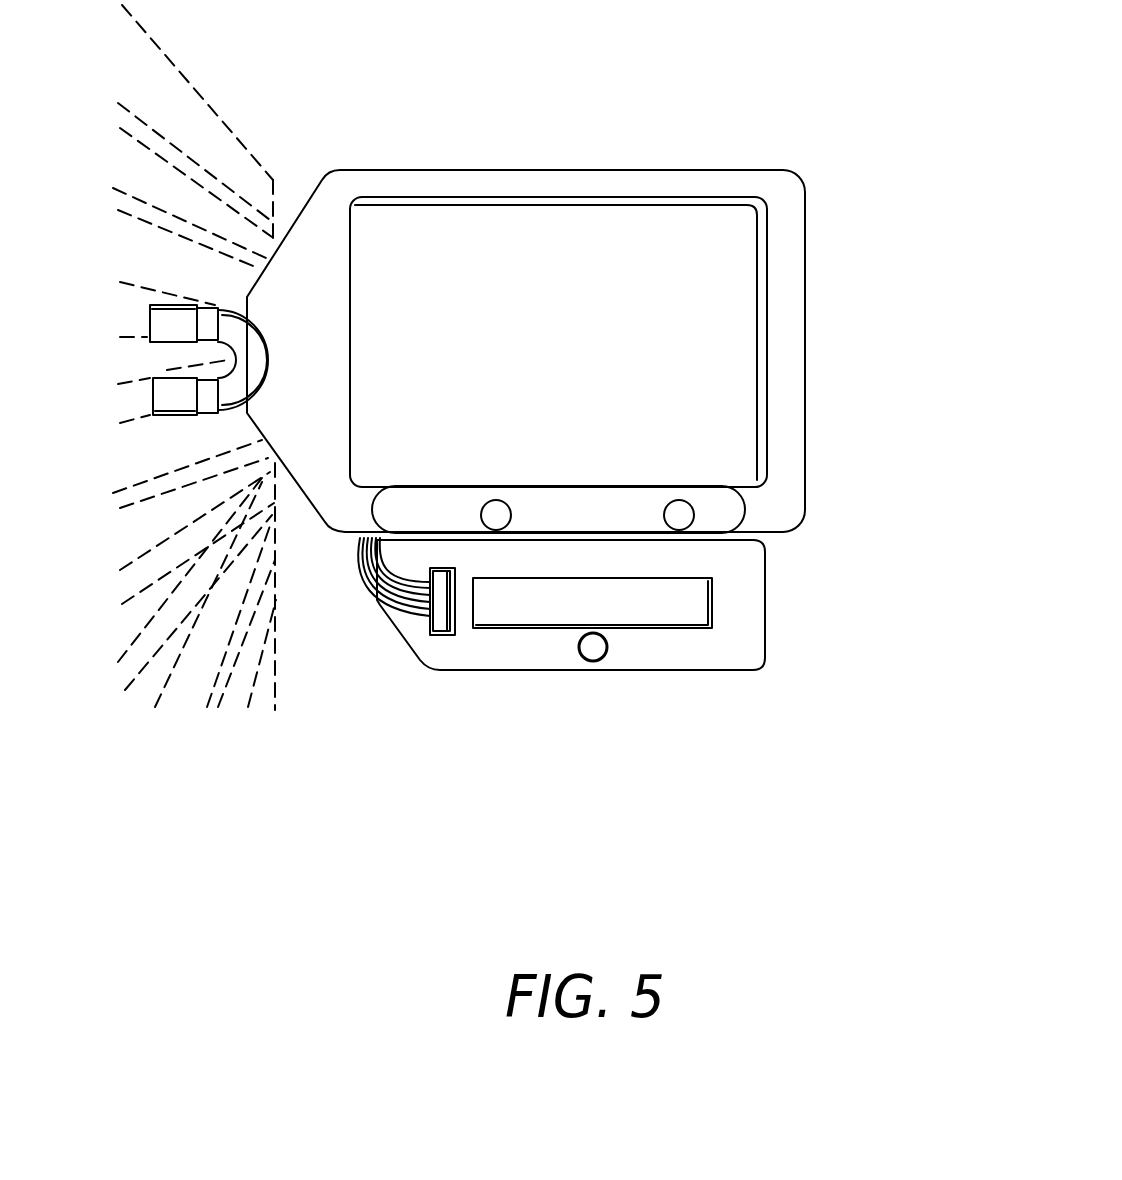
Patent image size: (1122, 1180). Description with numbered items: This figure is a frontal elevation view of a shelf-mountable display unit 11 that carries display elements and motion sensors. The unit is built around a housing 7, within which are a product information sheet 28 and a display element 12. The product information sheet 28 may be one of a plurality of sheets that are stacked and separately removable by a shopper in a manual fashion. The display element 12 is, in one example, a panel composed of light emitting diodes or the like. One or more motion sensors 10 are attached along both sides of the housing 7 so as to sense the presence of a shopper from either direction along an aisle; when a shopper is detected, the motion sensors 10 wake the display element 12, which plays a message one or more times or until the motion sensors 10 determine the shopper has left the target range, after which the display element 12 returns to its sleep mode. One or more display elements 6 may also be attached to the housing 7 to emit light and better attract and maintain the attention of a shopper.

The display element 6 is at (481, 518).
The housing 7 is at (467, 653).
The motion sensor 10 is at (593, 661).
The shelf-mountable display unit 11 is at (663, 182).
The display element 12 is at (677, 610).
The product information sheet 28 is at (513, 237).